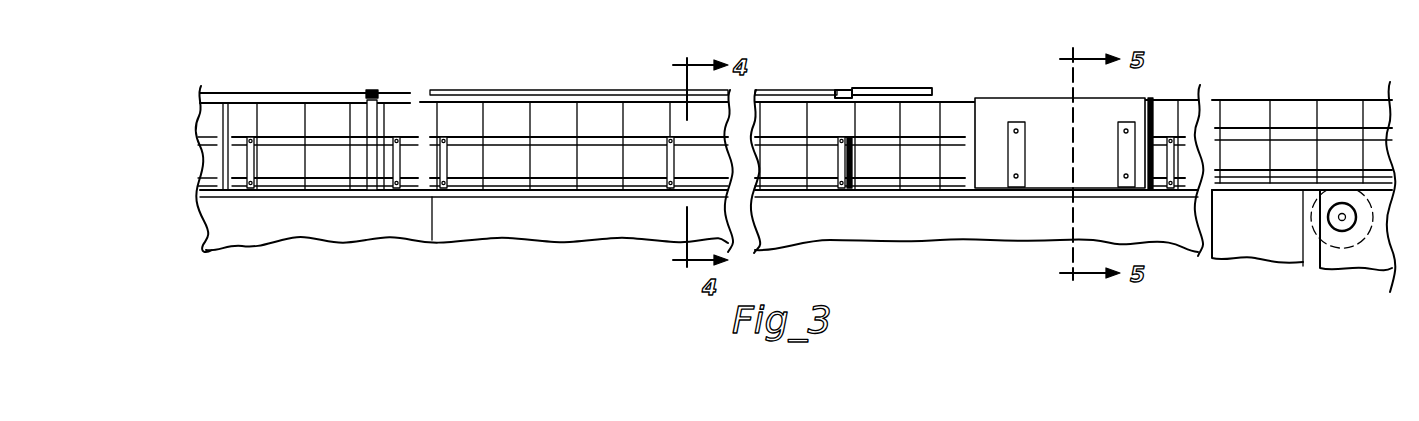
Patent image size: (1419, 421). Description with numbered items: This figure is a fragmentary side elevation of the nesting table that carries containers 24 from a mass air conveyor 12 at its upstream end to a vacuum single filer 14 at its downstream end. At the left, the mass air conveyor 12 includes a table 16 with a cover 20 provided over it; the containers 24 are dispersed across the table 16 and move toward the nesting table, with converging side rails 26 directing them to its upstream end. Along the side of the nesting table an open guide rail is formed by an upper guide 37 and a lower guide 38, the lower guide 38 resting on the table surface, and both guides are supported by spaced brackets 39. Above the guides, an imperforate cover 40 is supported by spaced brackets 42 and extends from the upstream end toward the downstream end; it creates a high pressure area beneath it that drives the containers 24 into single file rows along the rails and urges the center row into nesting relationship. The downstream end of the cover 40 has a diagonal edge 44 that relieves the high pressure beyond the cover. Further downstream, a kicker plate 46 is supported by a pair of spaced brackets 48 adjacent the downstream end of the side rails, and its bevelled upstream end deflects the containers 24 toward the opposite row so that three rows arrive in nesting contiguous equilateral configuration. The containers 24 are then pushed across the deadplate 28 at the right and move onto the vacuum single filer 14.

The mass air conveyor 12 is at (331, 249).
The vacuum single filer 14 is at (1375, 272).
The table 16 is at (235, 197).
The cover 20 is at (230, 92).
The containers 24 is at (326, 118).
The side rails 26 is at (383, 137).
The deadplate 28 is at (1288, 190).
The upper guide 37 is at (562, 138).
The lower guide 38 is at (507, 178).
The brackets 39 is at (665, 160).
The imperforate cover 40 is at (452, 92).
The brackets 42 is at (887, 60).
The diagonal edge 44 is at (952, 58).
The kicker plate 46 is at (1035, 100).
The brackets 48 is at (1025, 165).